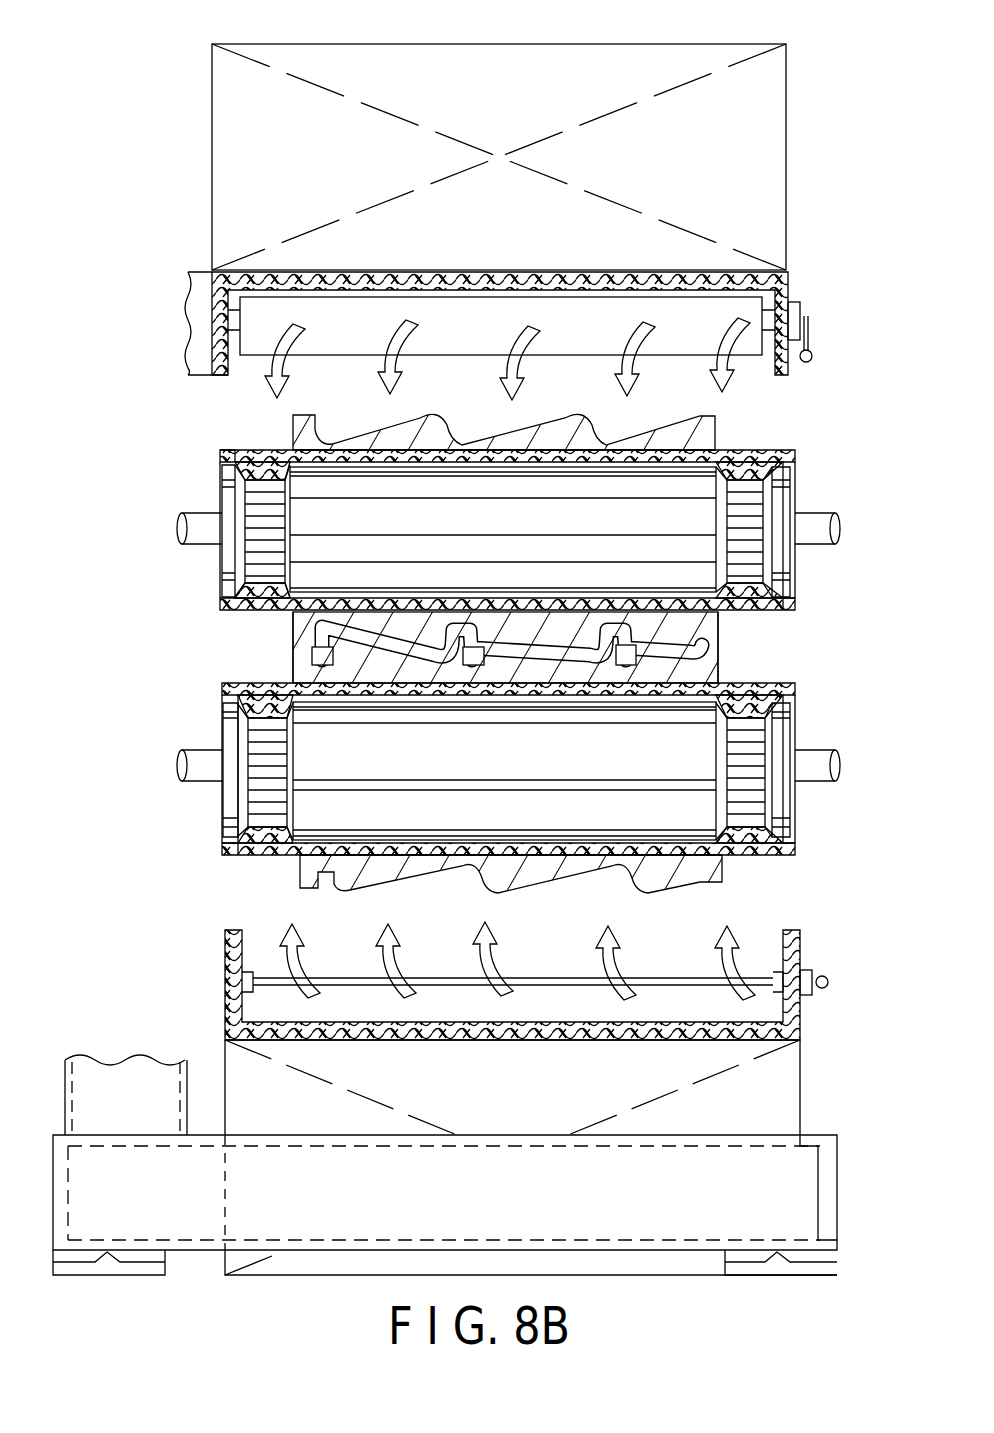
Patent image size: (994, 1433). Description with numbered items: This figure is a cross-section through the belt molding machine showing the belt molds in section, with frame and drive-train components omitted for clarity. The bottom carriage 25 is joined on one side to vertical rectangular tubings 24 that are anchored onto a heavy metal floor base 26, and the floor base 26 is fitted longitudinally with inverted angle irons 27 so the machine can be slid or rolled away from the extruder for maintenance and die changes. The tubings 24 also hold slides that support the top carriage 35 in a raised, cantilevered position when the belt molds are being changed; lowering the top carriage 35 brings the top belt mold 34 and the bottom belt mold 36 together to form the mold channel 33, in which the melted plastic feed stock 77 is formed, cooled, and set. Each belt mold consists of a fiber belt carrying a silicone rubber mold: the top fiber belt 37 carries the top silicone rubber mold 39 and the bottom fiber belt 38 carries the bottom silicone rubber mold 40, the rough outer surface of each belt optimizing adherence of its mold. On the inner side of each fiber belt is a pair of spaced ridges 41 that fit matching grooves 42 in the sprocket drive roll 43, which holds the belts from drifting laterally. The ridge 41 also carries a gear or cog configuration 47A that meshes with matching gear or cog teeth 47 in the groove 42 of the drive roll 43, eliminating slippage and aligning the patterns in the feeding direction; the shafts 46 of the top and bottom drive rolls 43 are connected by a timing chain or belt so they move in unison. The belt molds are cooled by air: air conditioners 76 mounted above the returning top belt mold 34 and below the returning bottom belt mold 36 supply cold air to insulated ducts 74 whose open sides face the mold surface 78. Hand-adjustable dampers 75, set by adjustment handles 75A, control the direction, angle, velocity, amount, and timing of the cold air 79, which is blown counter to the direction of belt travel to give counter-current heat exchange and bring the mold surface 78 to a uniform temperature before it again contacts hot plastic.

The vertical rectangular tubings 24 is at (108, 1109).
The bottom carriage 25 is at (818, 872).
The floor base 26 is at (373, 1194).
The inverted angle irons 27 is at (110, 1262).
The mold channel 33 is at (680, 648).
The top belt mold 34 is at (748, 442).
The top carriage 35 is at (806, 436).
The bottom belt mold 36 is at (800, 672).
The top fiber belt 37 is at (790, 460).
The bottom fiber belt 38 is at (790, 690).
The top silicone rubber mold 39 is at (300, 625).
The bottom silicone rubber mold 40 is at (236, 726).
The ridge 41 is at (235, 452).
The groove 42 is at (300, 500).
The sprocket drive roll 43 is at (461, 526).
The shaft 46 is at (180, 530).
The gear or cog teeth 47 is at (265, 548).
The gear or cog configuration on ridge 47A is at (235, 490).
The insulated air-conditioning duct 74 is at (462, 278).
The damper 75 is at (530, 331).
The adjustment handle 75A is at (812, 318).
The air conditioner 76 is at (588, 70).
The melted plastic feed stock 77 is at (308, 656).
The mold surface 78 is at (333, 430).
The cold air 79 is at (396, 390).